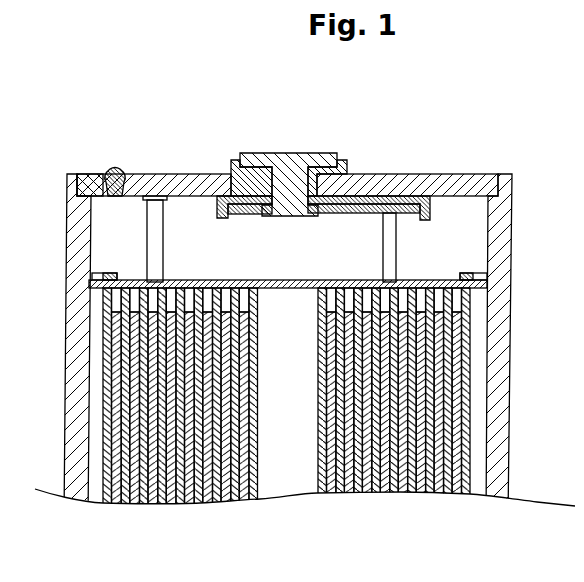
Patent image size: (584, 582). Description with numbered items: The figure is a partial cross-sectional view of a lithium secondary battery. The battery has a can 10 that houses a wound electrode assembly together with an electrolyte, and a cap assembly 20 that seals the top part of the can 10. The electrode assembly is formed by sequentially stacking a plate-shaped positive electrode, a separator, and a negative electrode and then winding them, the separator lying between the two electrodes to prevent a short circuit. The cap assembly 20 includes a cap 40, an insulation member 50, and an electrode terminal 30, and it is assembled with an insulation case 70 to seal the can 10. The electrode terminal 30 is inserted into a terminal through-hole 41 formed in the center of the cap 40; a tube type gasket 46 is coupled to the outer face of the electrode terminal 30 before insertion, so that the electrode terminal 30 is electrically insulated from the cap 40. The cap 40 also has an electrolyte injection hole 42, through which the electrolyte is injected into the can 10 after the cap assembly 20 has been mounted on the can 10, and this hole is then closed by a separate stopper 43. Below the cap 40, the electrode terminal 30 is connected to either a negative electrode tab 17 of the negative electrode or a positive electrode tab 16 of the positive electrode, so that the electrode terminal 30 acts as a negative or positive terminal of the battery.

The can 10 is at (502, 420).
The positive electrode tab 16 is at (153, 223).
The negative electrode tab 17 is at (397, 252).
The cap assembly 20 is at (333, 326).
The electrode terminal 30 is at (285, 162).
The cap 40 is at (447, 175).
The terminal through-hole 41 is at (253, 188).
The electrolyte injection hole 42 is at (101, 191).
The stopper 43 is at (114, 171).
The tube type gasket 46 is at (345, 158).
The insulation member 50 is at (430, 208).
The insulation case 70 is at (128, 280).